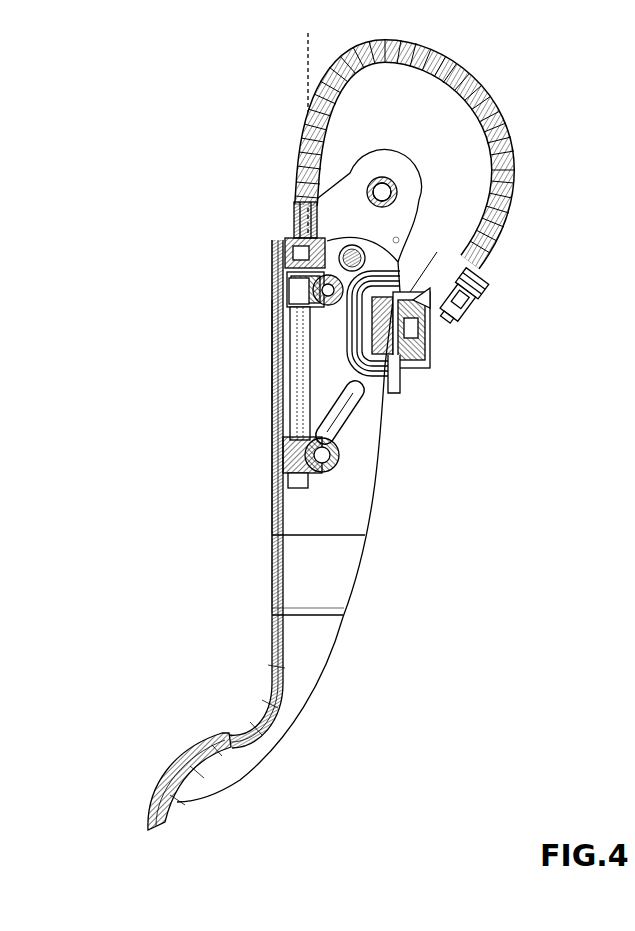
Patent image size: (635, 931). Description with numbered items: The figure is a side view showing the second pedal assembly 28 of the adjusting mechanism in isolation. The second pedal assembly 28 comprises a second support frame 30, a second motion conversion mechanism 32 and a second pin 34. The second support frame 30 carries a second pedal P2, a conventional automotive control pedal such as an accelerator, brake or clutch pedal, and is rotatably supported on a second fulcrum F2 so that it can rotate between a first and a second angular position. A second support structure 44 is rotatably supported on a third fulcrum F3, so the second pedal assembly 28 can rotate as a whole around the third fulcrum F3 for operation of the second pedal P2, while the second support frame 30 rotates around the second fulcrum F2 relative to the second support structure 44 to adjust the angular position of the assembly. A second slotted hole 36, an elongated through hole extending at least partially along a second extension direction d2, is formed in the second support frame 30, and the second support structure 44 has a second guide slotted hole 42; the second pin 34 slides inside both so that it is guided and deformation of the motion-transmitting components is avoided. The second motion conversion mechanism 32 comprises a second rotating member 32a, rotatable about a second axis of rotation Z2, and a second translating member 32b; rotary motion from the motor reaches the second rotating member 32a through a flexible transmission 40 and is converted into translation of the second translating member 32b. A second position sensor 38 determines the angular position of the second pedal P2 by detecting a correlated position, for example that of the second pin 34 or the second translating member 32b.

The second pedal assembly 28 is at (243, 311).
The second support frame 30 is at (362, 532).
The second motion conversion mechanism 32 is at (270, 223).
The second rotating member 32a is at (273, 383).
The second translating member 32b is at (273, 487).
The second pin 34 is at (342, 470).
The second slotted hole 36 is at (352, 418).
The second position sensor 38 is at (293, 230).
The flexible transmission 40 is at (485, 77).
The second guide slotted hole 42 is at (273, 407).
The second support structure 44 is at (353, 178).
The second fulcrum F2 is at (396, 238).
The third fulcrum F3 is at (390, 180).
The second axis of rotation Z2 is at (308, 36).
The second extension direction d2 is at (274, 540).
The second pedal P2 is at (166, 770).